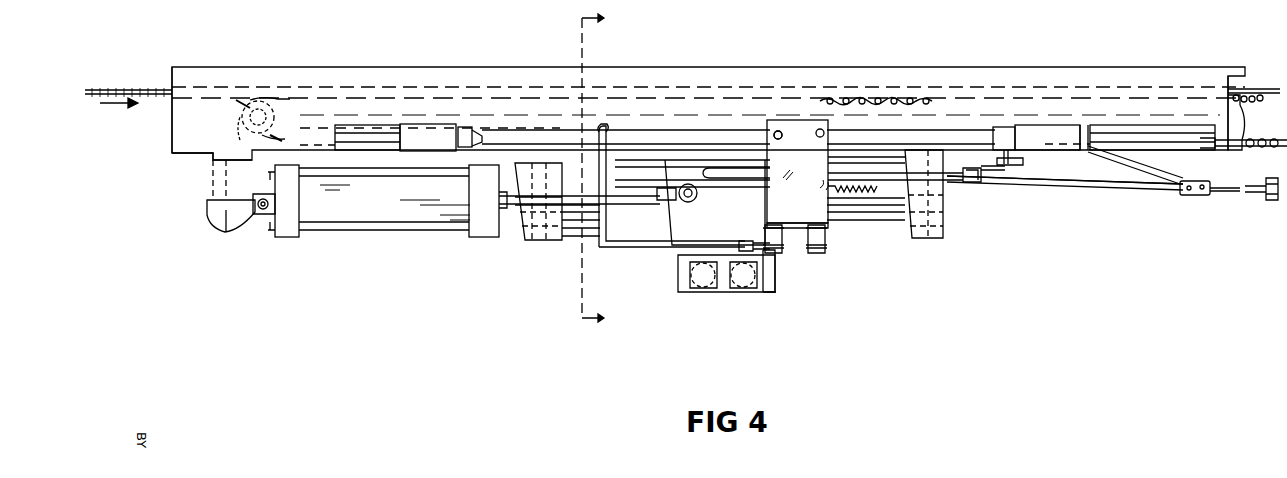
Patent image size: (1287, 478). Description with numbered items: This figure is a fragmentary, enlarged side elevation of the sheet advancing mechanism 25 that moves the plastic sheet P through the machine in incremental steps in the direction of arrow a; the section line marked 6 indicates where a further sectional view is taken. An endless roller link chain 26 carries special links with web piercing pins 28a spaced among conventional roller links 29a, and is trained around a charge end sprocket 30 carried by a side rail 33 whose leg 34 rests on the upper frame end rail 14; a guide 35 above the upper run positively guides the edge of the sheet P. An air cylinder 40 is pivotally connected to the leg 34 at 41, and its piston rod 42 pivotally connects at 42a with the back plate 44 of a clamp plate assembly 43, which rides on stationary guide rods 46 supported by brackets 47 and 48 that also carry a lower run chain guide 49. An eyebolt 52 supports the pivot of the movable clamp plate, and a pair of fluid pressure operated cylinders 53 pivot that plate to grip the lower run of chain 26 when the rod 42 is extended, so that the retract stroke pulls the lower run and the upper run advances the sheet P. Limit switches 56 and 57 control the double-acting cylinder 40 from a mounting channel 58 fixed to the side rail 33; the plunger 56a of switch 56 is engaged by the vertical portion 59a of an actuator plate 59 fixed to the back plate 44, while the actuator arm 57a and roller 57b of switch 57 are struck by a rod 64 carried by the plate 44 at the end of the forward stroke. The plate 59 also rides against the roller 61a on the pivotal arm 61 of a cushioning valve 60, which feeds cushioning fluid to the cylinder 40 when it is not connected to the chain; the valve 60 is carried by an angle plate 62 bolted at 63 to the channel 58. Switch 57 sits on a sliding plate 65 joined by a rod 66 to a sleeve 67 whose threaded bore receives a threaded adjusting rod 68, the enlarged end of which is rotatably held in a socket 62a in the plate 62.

The plastic sheet P is at (112, 90).
The arrow a is at (111, 104).
The section line 6 is at (606, 169).
The upper frame end rail 14 is at (224, 230).
The sheet advancing mechanism 25 is at (362, 70).
The endless roller link chain 26 is at (488, 100).
The plastic web piercing pins 28a is at (258, 100).
The roller link 29a is at (276, 100).
The charge end sprocket 30 is at (212, 157).
The side rail 33 is at (180, 107).
The leg 34 is at (225, 172).
The guide 35 is at (1232, 74).
The air cylinder 40 is at (292, 238).
The pivotal connection 41 is at (265, 210).
The piston rod 42 is at (520, 210).
The pivotal connection 42a is at (700, 165).
The clamp plate assembly 43 is at (772, 290).
The back plate 44 is at (714, 236).
The stationary guide rods 46 is at (592, 232).
The bracket 47 is at (535, 242).
The bracket 48 is at (926, 238).
The lower run chain guide 49 is at (640, 155).
The eyebolt 52 is at (660, 152).
The fluid pressure operated cylinders 53 is at (700, 290).
The limit switch 56 is at (425, 130).
The depressible plunger 56a is at (485, 135).
The limit switch 57 is at (1060, 128).
The pivotal actuator arm 57a is at (1005, 172).
The roller 57b is at (985, 185).
The mounting channel 58 is at (390, 130).
The actuator plate 59 is at (602, 248).
The vertically extending portion 59a is at (608, 125).
The cushioning valve 60 is at (822, 245).
The actuator arm 61 is at (760, 278).
The roller 61a is at (745, 244).
The angle plate 62 is at (813, 157).
The socket 62a is at (822, 192).
The bolt 63 is at (782, 132).
The rod 64 is at (955, 190).
The plate 65 is at (996, 130).
The rod 66 is at (1165, 160).
The sleeve 67 is at (1194, 196).
The threaded adjusting rod 68 is at (1108, 188).